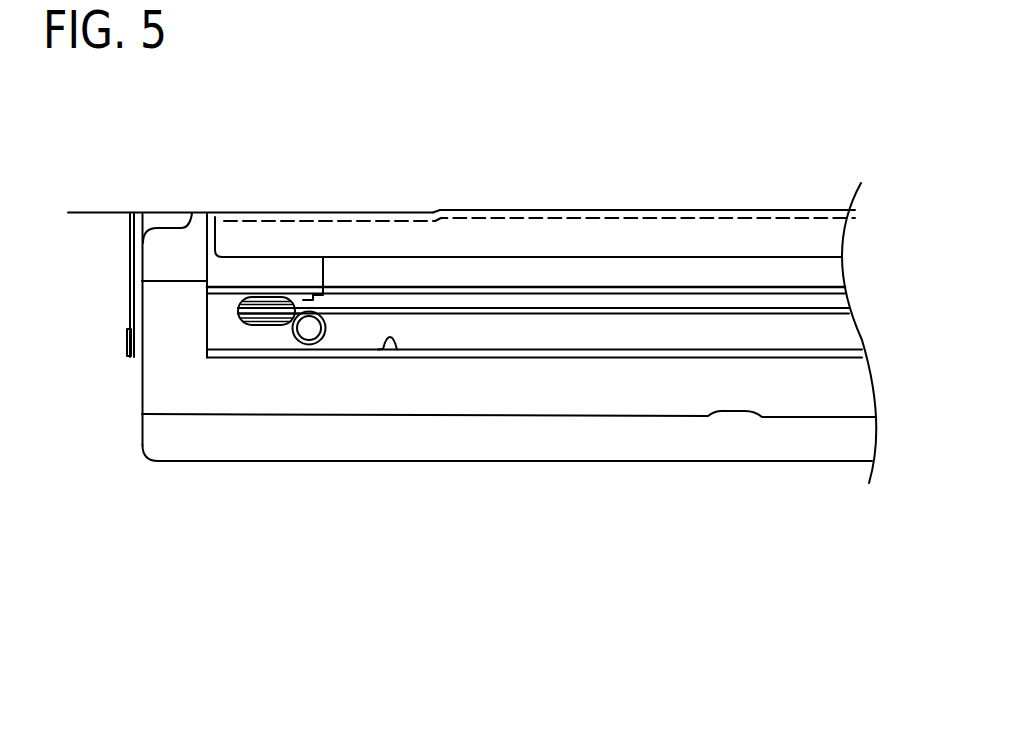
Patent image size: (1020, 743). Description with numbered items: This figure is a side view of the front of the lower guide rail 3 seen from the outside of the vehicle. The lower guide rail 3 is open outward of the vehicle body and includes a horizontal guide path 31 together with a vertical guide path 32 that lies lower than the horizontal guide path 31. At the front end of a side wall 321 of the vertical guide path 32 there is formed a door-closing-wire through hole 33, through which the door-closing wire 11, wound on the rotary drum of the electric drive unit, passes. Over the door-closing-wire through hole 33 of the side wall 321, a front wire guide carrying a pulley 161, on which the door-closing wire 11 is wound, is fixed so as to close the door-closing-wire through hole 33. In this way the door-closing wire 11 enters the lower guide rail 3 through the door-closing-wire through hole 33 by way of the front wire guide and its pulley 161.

The lower guide rail 3 is at (659, 211).
The door-closing wire 11 is at (489, 306).
The horizontal guide path 31 is at (739, 222).
The vertical guide path 32 is at (393, 342).
The door-closing-wire through hole 33 is at (262, 326).
The pulley 161 is at (281, 311).
The side wall 321 is at (222, 334).